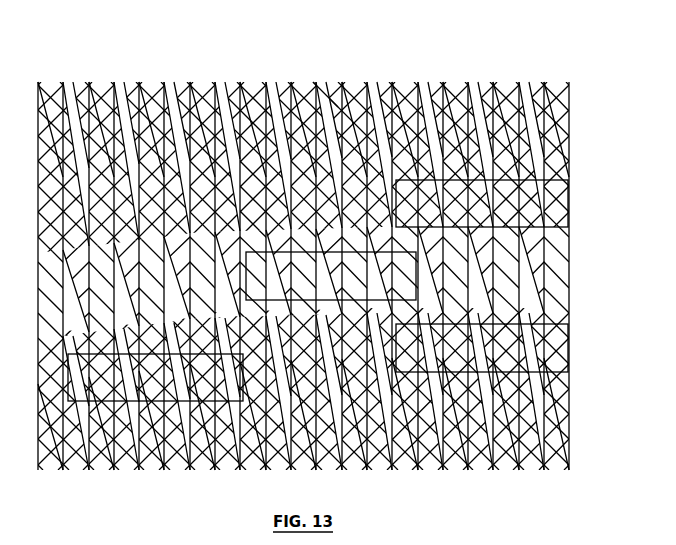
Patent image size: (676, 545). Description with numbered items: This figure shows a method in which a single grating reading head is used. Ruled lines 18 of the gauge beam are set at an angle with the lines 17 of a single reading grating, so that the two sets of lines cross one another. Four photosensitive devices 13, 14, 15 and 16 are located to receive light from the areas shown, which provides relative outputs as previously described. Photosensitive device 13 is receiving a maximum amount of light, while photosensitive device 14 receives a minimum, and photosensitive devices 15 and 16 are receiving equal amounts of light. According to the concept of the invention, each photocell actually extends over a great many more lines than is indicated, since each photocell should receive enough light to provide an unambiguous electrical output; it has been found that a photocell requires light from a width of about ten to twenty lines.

The photosensitive device 13 is at (70, 384).
The photosensitive device 14 is at (292, 251).
The photosensitive device 15 is at (533, 191).
The photosensitive device 16 is at (528, 354).
The lines of single reading grating 17 is at (280, 92).
The ruled lines of gauge beam 18 is at (301, 92).